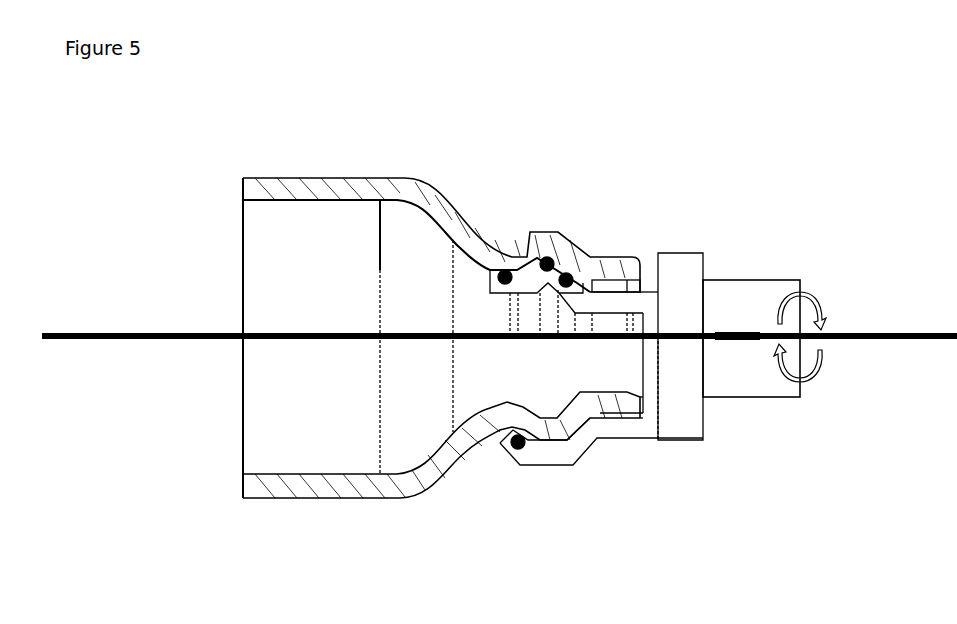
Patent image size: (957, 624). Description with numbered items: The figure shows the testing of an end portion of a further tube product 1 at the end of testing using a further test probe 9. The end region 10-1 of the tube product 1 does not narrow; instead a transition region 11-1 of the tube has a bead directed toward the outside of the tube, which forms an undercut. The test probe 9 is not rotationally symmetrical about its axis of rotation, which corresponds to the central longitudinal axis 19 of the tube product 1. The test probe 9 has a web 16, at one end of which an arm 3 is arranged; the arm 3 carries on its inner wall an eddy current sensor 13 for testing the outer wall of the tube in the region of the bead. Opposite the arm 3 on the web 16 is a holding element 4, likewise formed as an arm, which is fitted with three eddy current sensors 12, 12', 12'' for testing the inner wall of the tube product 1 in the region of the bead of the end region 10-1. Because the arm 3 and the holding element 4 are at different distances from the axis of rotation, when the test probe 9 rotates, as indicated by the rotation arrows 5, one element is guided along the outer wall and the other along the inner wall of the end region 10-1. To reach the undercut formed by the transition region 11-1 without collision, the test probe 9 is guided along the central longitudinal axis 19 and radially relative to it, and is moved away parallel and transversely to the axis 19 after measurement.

The tube product 1 is at (330, 108).
The arm 3 is at (523, 463).
The holding element 4 is at (523, 288).
The rotation direction 5 is at (815, 382).
The test probe 9 is at (731, 207).
The end region 10-1 is at (635, 550).
The transition region 11-1 is at (597, 137).
The eddy current sensor 12 is at (621, 245).
The eddy current sensor 12' is at (568, 222).
The eddy current sensor 12'' is at (515, 229).
The eddy current sensor 13 is at (511, 450).
The web 16 is at (686, 278).
The central longitudinal axis 19 is at (82, 340).